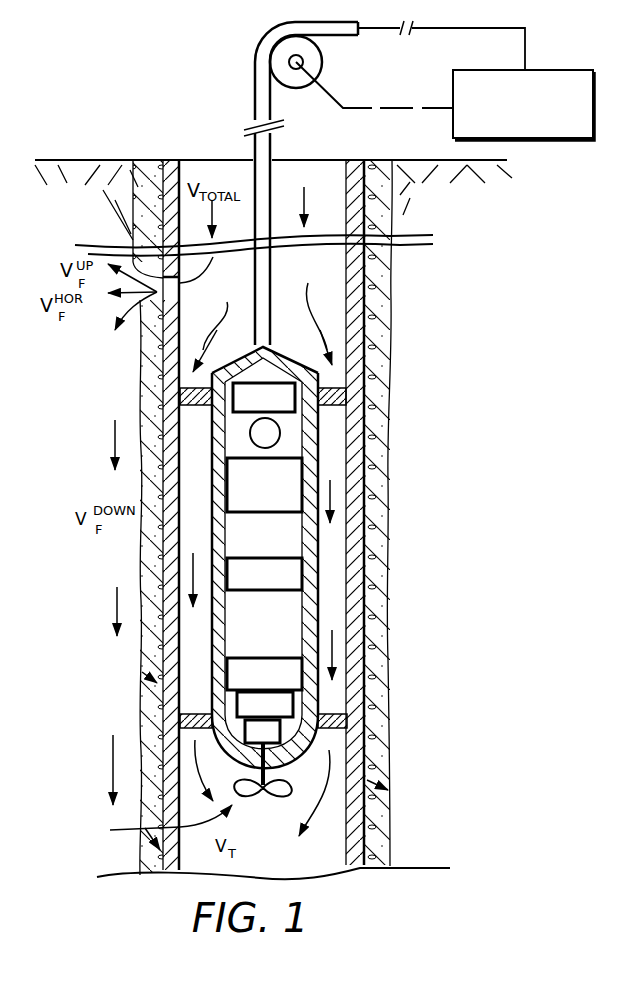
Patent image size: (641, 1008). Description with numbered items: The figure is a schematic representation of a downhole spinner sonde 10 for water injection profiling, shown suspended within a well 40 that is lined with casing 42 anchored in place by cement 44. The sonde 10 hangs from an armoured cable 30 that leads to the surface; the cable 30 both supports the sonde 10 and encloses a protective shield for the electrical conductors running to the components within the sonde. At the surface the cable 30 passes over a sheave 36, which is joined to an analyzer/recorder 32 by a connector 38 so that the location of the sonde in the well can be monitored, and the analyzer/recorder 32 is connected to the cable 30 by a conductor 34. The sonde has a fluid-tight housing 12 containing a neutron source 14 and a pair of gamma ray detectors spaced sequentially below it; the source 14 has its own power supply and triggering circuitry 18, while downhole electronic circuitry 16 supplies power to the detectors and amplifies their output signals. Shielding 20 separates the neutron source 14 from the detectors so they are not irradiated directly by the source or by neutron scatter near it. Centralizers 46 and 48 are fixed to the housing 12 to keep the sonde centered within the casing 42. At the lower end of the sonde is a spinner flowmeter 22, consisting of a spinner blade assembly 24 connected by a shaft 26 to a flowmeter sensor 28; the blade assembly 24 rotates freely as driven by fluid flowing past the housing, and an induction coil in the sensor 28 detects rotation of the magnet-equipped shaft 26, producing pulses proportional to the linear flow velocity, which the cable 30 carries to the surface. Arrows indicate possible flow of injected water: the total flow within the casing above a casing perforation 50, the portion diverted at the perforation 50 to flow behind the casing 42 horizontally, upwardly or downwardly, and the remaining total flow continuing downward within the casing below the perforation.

The downhole spinner sonde 10 is at (276, 577).
The fluid-tight housing 12 is at (212, 542).
The neutron source 14 is at (280, 428).
The downhole electronic circuitry 16 is at (293, 703).
The power supply and triggering circuitry 18 is at (300, 382).
The shielding 20 is at (295, 480).
The spinner flowmeter 22 is at (159, 823).
The spinner blade assembly 24 is at (293, 787).
The shaft 26 is at (275, 762).
The flowmeter sensor 28 is at (245, 731).
The armoured cable 30 is at (272, 283).
The analyzer/recorder 32 is at (595, 80).
The conductor 34 is at (527, 45).
The sheave 36 is at (314, 57).
The connector 38 is at (362, 101).
The well 40 is at (133, 162).
The casing 42 is at (180, 168).
The cement 44 is at (380, 315).
The centralizer 46 is at (346, 398).
The centralizer 48 is at (347, 718).
The casing perforation 50 is at (163, 297).